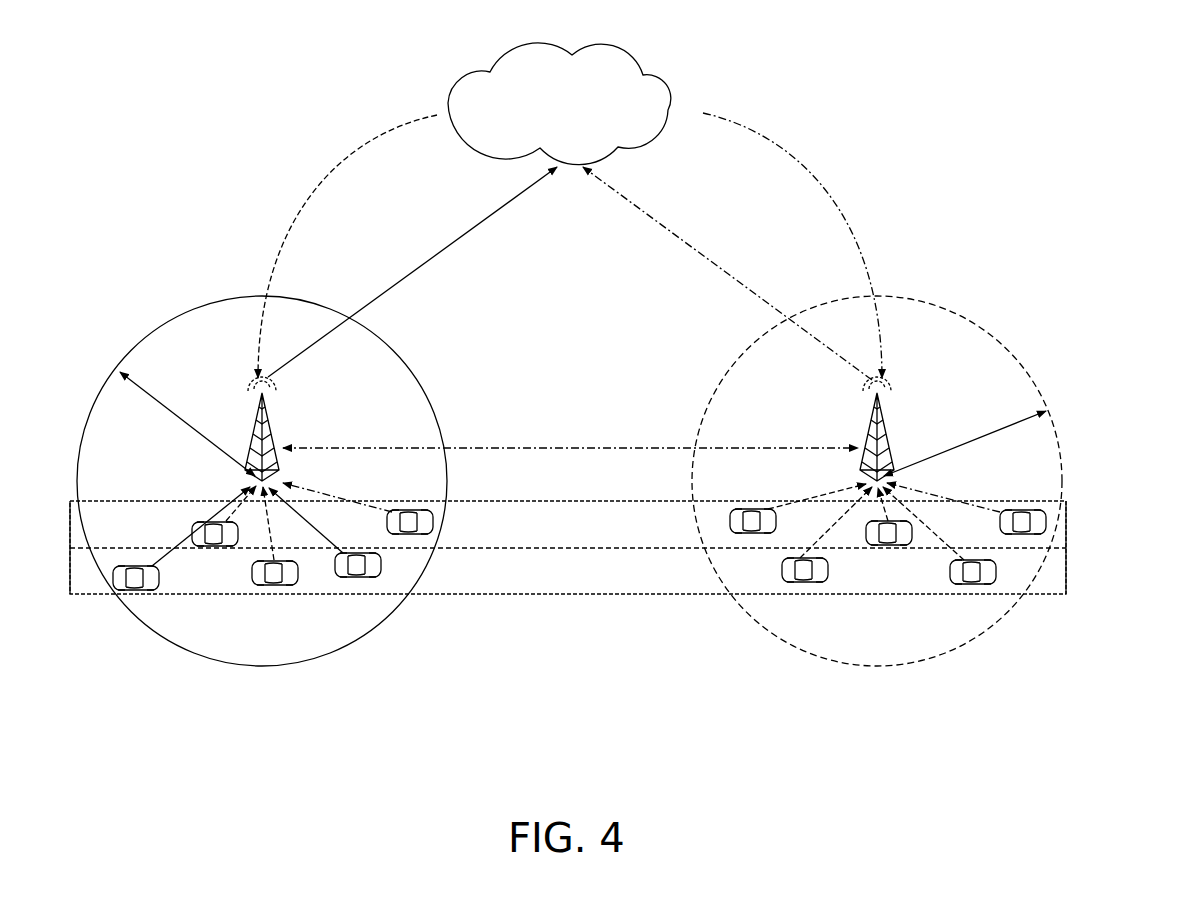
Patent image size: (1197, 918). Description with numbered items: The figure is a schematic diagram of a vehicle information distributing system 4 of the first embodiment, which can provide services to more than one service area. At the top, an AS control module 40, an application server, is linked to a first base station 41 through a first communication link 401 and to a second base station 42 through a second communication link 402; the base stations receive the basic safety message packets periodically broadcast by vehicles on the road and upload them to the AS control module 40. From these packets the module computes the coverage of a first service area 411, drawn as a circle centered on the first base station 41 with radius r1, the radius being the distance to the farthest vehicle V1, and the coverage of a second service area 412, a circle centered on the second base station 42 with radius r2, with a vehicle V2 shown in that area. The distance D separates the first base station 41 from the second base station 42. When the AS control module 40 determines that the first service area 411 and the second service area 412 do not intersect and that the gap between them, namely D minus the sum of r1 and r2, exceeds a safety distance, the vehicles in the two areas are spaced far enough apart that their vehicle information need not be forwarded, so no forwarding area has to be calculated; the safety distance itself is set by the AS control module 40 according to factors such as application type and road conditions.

The vehicle information distributing system 4 is at (1079, 108).
The AS control module 40 is at (613, 45).
The first base station 41 is at (274, 432).
The second base station 42 is at (889, 424).
The first communication link 401 is at (285, 218).
The second communication link 402 is at (880, 233).
The first service area 411 is at (178, 646).
The second service area 412 is at (973, 642).
The radius of the first service area r1 is at (187, 424).
The radius of the second service area r2 is at (965, 443).
The distance between the first base station and the second base station D is at (570, 438).
The vehicle V1 is at (137, 591).
The second vehicle V2 is at (1023, 507).